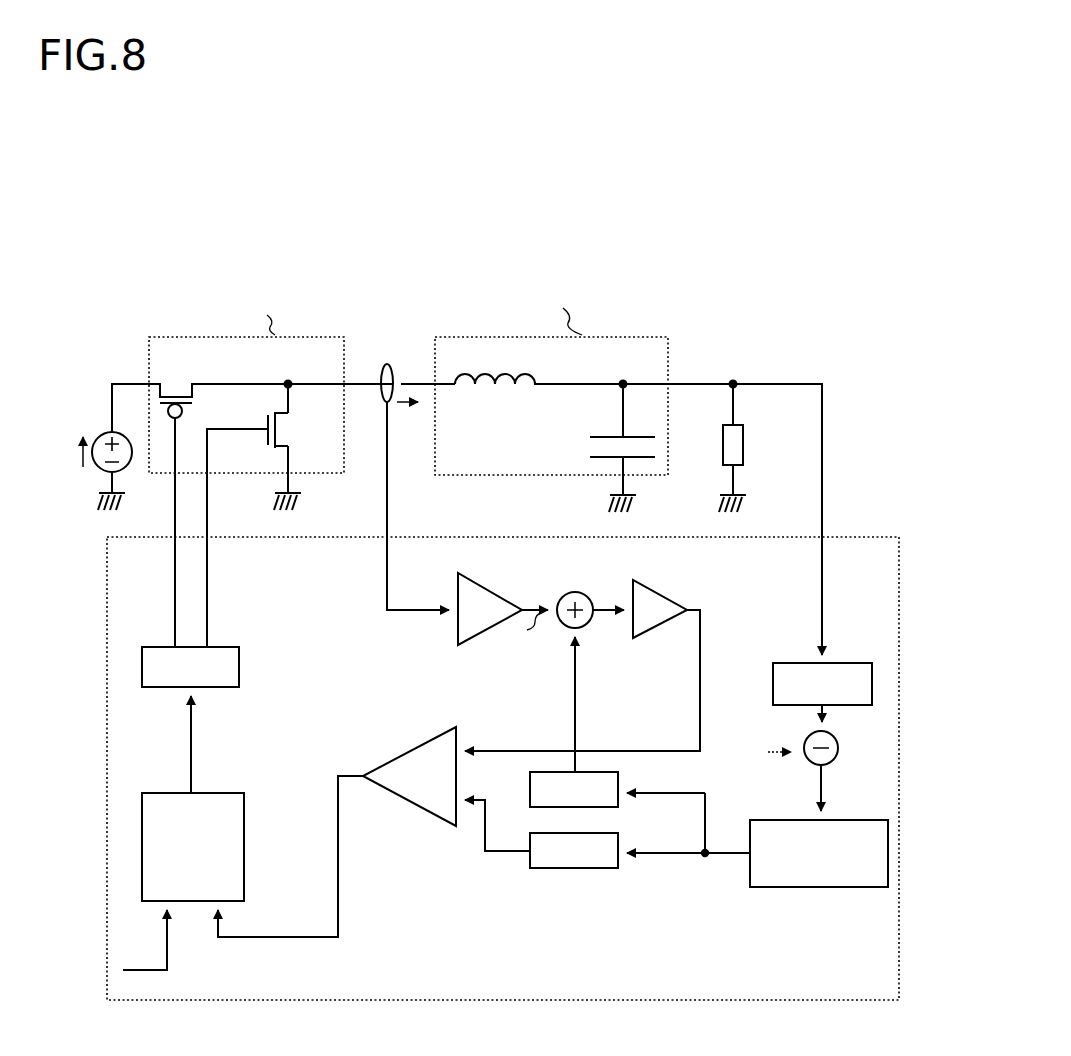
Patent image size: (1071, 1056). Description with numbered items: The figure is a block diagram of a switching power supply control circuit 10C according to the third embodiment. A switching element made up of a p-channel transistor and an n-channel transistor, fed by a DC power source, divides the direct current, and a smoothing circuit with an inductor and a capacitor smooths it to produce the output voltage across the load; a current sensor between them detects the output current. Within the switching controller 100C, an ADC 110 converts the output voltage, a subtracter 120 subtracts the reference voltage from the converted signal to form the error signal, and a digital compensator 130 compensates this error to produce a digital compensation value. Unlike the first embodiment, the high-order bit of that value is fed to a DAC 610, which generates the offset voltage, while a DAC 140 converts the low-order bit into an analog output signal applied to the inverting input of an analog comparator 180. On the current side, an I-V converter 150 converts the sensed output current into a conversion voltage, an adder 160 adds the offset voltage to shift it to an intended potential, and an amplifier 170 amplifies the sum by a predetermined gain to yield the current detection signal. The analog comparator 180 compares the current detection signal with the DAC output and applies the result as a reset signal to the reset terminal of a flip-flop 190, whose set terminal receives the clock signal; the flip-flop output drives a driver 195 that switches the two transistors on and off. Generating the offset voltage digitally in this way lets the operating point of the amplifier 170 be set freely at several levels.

The switching power supply control circuit 10C is at (515, 208).
The switching controller 100C is at (828, 537).
The ADC 110 is at (832, 661).
The subtracter 120 is at (802, 743).
The digital compensator 130 is at (788, 887).
The DAC 140 is at (575, 877).
The I-V converter 150 is at (488, 590).
The adder 160 is at (585, 590).
The amplifier 170 is at (653, 590).
The analog comparator 180 is at (413, 813).
The flip-flop 190 is at (244, 840).
The driver 195 is at (239, 663).
The DAC 610 is at (528, 792).